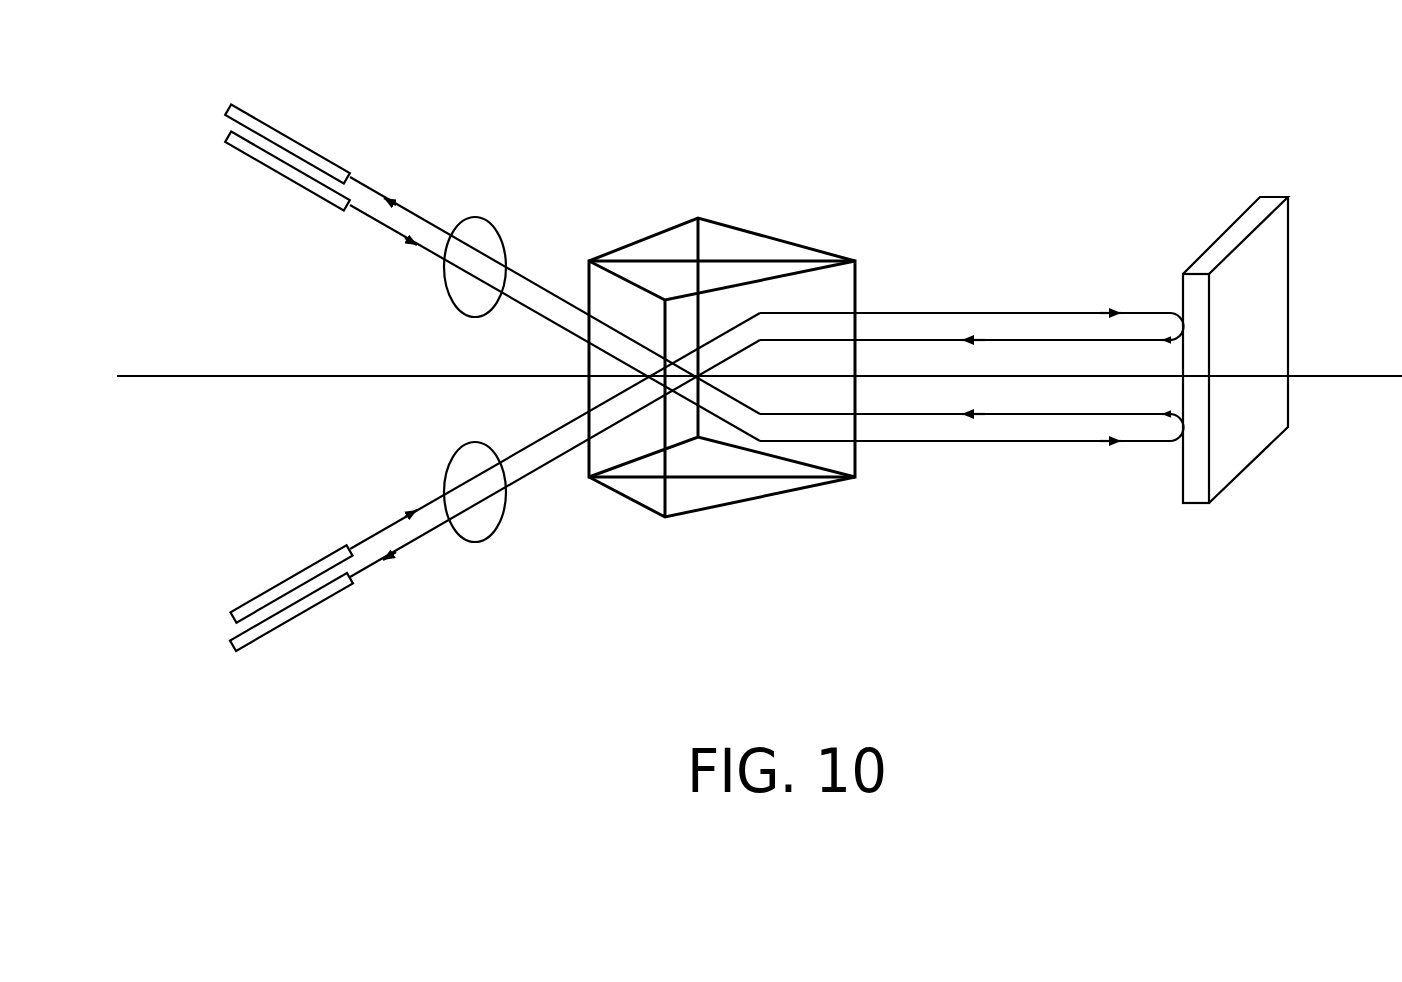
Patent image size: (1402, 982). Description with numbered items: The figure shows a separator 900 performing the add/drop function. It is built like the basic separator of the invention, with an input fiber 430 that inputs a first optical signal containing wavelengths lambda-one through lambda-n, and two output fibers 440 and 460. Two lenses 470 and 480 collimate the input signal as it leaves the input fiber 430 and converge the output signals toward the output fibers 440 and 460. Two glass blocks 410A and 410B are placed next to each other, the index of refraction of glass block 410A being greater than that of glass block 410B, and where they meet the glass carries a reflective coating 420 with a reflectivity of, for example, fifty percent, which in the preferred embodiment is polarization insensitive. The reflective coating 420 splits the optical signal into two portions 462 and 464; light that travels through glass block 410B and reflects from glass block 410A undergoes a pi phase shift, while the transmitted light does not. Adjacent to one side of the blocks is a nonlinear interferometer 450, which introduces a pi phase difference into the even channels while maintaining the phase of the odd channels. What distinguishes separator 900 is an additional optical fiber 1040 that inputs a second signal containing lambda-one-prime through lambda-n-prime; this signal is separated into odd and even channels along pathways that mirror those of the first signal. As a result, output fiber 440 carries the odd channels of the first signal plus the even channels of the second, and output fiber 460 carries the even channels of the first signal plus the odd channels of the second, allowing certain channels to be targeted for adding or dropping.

The separator 900 is at (852, 100).
The glass block 410A is at (608, 275).
The glass block 410B is at (658, 231).
The reflective coating 420 is at (594, 377).
The input fiber 430 is at (317, 197).
The output fiber 440 is at (307, 148).
The nonlinear interferometer 450 is at (1277, 197).
The output fiber 460 is at (307, 615).
The signal portion 462 is at (1035, 313).
The signal portion 464 is at (1035, 441).
The lens 470 is at (473, 217).
The lens 480 is at (487, 540).
The optical fiber 1040 is at (320, 556).